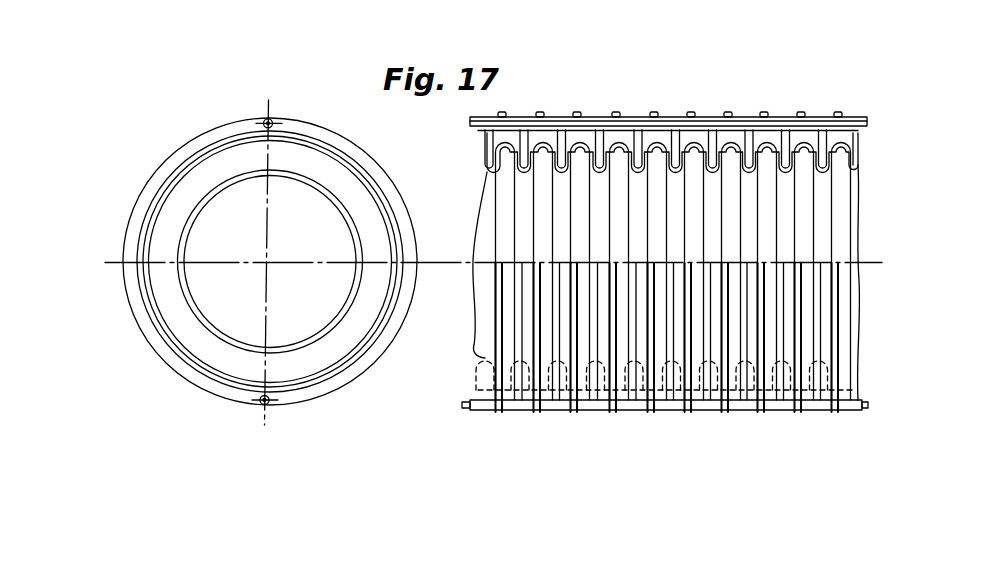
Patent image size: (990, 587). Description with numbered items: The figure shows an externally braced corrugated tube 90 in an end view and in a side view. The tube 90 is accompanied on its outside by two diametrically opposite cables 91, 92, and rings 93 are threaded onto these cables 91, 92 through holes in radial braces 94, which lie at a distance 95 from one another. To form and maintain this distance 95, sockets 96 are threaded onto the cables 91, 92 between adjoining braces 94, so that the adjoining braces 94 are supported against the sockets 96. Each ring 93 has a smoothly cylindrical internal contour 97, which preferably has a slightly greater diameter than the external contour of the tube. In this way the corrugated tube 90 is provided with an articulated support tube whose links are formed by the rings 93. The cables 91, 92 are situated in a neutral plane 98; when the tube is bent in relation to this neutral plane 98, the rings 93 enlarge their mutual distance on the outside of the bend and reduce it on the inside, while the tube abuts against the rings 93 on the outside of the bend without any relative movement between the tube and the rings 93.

The tube 90 is at (190, 342).
The cable 91 is at (282, 117).
The cable 92 is at (268, 408).
The ring 93 is at (140, 223).
The radial brace 94 is at (141, 222).
The distance 95 is at (628, 140).
The socket 96 is at (262, 118).
The internal contour 97 is at (351, 355).
The neutral plane 98 is at (262, 200).